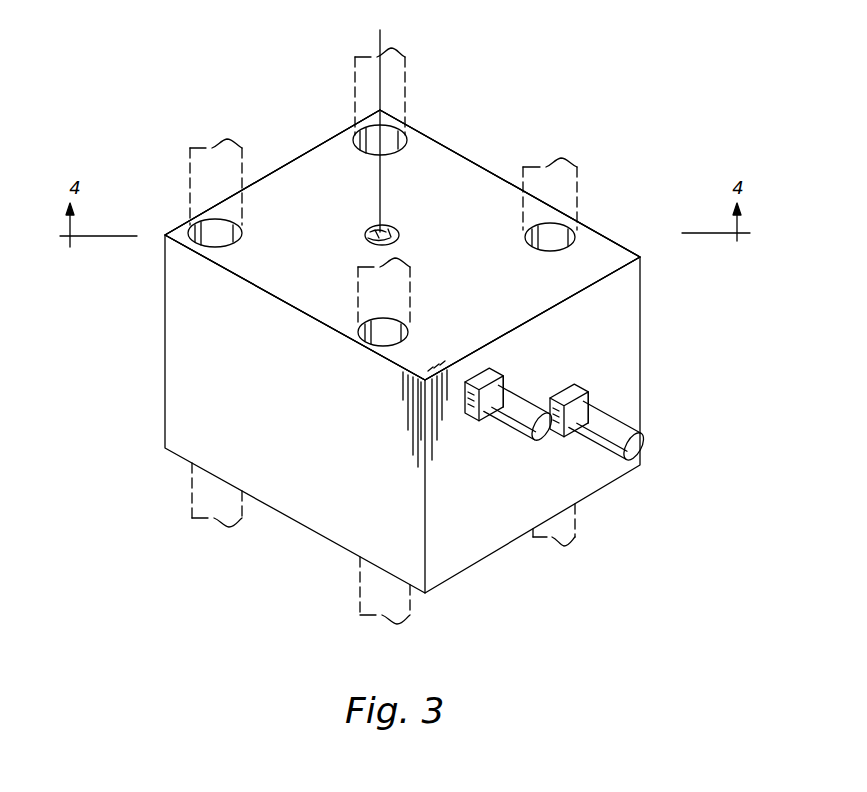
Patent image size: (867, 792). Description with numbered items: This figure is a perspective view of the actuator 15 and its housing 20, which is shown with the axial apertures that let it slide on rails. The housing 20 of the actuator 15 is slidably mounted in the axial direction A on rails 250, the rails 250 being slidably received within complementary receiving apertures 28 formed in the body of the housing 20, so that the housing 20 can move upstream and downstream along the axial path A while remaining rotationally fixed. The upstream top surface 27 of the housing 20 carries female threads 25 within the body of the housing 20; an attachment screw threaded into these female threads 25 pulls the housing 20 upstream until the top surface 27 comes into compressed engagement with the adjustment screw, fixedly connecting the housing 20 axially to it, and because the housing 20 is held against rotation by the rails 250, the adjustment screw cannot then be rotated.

The actuator 15 is at (608, 222).
The actuator housing 20 is at (434, 142).
The female threads 25 is at (384, 226).
The upstream top surface 27 is at (440, 233).
The receiving apertures 28 is at (358, 133).
The rails 250 is at (407, 108).
The axial path of travel A is at (380, 191).